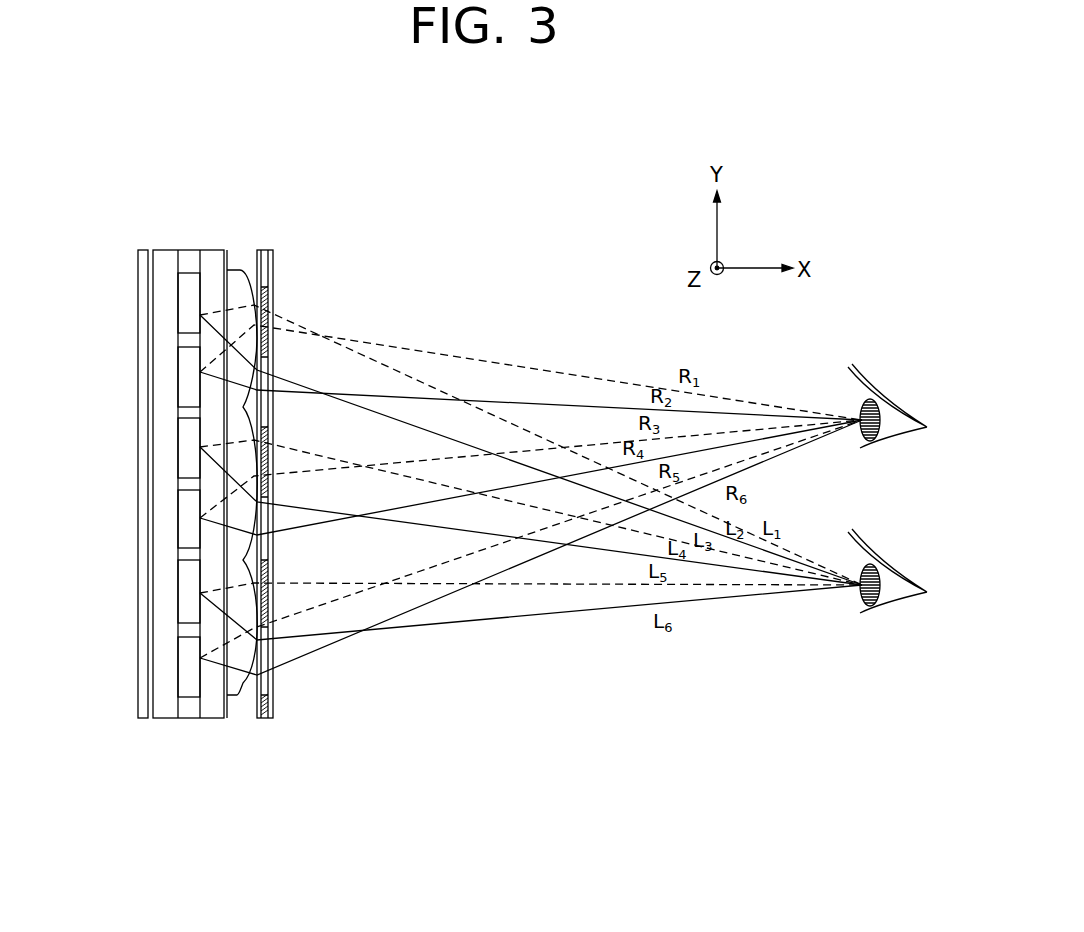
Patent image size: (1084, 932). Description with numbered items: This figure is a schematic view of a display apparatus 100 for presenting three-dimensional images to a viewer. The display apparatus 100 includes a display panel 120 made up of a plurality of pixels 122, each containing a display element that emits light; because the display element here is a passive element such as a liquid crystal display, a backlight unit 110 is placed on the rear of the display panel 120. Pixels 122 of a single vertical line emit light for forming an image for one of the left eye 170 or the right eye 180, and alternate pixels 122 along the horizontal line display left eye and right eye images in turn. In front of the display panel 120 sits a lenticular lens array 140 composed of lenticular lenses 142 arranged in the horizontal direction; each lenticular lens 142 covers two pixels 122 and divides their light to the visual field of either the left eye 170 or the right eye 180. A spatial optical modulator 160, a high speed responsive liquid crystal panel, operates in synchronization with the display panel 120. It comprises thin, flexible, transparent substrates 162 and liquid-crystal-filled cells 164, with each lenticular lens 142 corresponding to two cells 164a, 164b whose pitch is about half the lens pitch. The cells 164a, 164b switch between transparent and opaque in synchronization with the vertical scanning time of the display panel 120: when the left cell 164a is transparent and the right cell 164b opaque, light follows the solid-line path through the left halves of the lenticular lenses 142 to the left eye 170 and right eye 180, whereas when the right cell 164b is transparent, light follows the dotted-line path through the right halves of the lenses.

The display apparatus 100 is at (122, 210).
The backlight unit 110 is at (143, 720).
The display panel 120 is at (225, 240).
The pixel 122 is at (178, 312).
The lenticular lens array 140 is at (244, 268).
The lenticular lens 142 is at (237, 697).
The spatial optical modulator 160 is at (281, 251).
The substrate 162 is at (263, 721).
The cell 164 is at (377, 687).
The left side cell 164a is at (270, 683).
The right side cell 164b is at (272, 616).
The left eye 170 is at (892, 602).
The right eye 180 is at (891, 417).